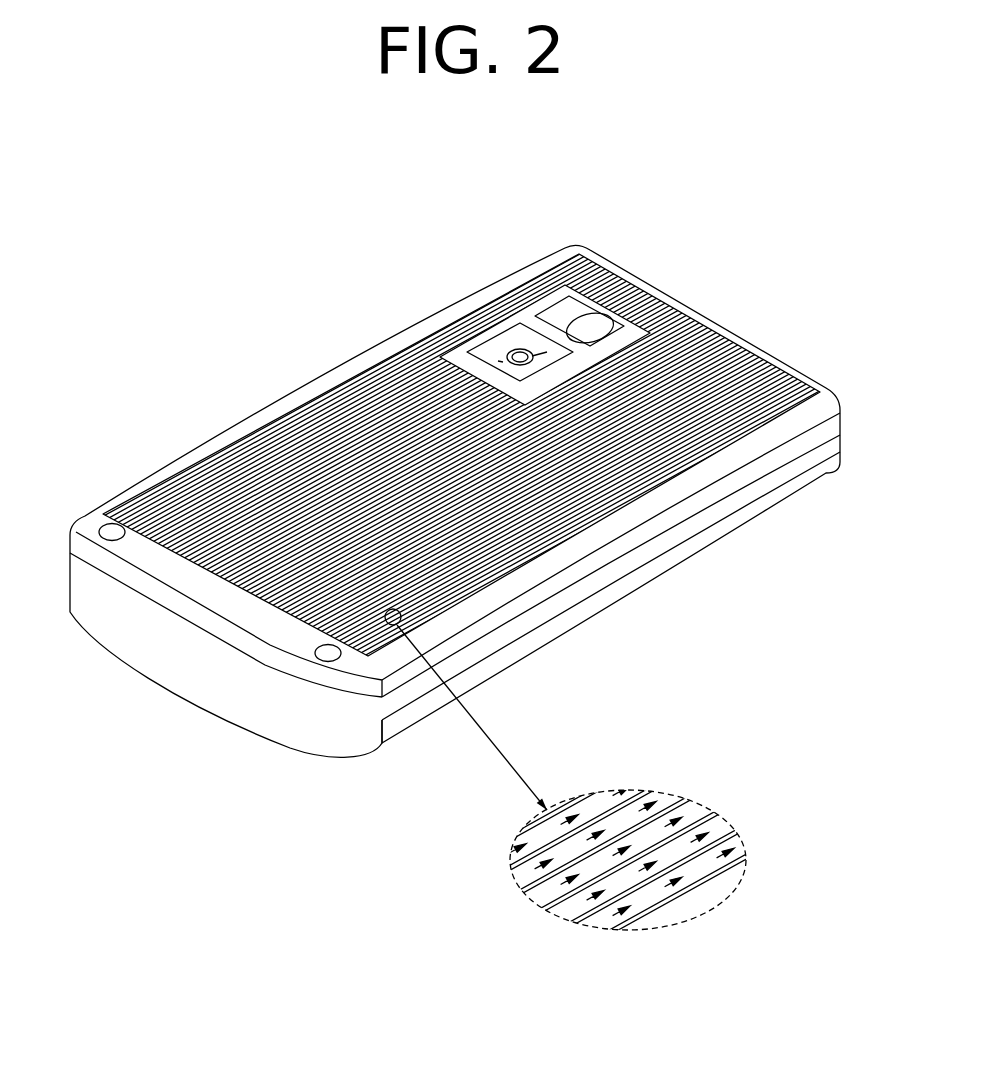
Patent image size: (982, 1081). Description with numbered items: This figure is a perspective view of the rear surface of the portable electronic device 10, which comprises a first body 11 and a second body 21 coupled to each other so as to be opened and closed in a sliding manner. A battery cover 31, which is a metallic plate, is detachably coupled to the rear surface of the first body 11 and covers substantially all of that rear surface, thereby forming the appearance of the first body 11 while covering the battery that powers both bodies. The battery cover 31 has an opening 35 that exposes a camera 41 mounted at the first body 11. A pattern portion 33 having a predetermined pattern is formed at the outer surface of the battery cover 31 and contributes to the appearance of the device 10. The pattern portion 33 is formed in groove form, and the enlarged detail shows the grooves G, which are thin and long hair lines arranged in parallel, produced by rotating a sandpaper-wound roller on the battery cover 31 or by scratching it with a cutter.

The portable electronic device 10 is at (297, 227).
The first body 11 is at (338, 773).
The second body 21 is at (563, 647).
The battery cover 31 is at (320, 378).
The pattern portion 33 is at (177, 493).
The opening 35 is at (593, 290).
The camera 41 is at (500, 348).
The grooves G is at (537, 900).